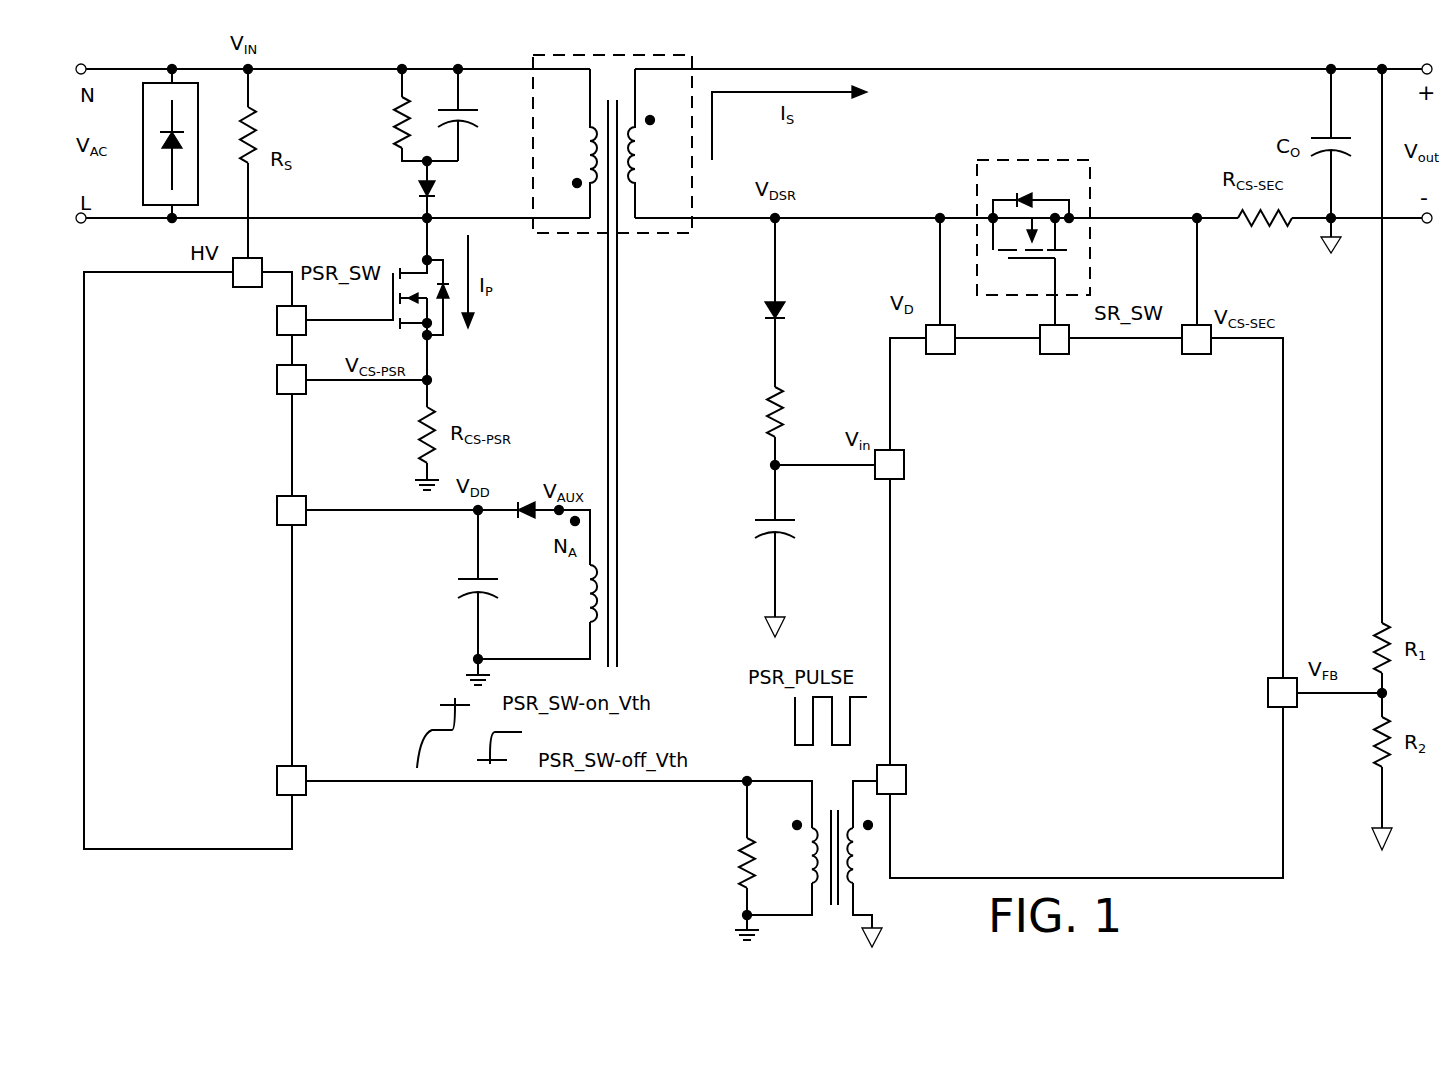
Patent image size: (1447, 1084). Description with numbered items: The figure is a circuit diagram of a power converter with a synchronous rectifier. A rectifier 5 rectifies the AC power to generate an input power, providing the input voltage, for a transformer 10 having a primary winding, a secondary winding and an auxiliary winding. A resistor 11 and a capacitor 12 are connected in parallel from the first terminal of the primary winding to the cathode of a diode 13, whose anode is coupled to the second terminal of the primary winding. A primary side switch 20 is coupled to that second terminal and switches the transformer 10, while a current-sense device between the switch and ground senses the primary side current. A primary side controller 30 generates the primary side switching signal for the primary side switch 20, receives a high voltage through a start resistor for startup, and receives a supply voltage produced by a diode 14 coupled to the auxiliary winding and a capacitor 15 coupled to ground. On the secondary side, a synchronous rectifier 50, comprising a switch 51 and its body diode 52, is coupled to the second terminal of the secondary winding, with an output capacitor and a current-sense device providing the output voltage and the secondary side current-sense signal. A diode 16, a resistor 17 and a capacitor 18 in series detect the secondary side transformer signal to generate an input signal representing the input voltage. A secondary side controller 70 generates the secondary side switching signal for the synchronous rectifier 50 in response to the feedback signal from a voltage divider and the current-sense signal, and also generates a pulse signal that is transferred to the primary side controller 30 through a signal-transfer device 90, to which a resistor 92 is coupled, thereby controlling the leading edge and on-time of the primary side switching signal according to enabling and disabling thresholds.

The rectifier 5 is at (180, 144).
The transformer 10 is at (612, 348).
The resistor 11 is at (407, 113).
The capacitor 12 is at (465, 113).
The diode 13 is at (446, 209).
The diode 14 is at (520, 495).
The capacitor 15 is at (491, 597).
The diode 16 is at (750, 302).
The resistor 17 is at (749, 453).
The capacitor 18 is at (754, 577).
The primary side switch 20 is at (377, 318).
The primary side controller 30 is at (195, 553).
The synchronous rectifier 50 is at (1053, 242).
The switch 51 is at (1030, 271).
The body diode 52 is at (1031, 194).
The secondary side controller 70 is at (1086, 601).
The signal-transfer device 90 is at (838, 854).
The resistor 92 is at (722, 860).